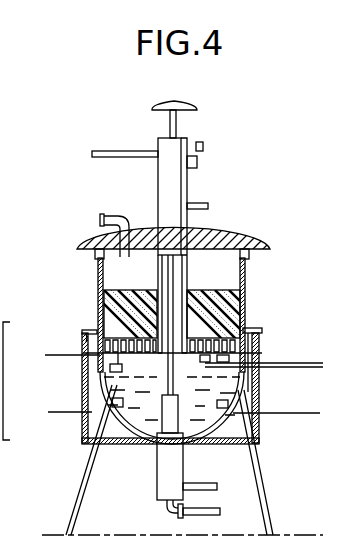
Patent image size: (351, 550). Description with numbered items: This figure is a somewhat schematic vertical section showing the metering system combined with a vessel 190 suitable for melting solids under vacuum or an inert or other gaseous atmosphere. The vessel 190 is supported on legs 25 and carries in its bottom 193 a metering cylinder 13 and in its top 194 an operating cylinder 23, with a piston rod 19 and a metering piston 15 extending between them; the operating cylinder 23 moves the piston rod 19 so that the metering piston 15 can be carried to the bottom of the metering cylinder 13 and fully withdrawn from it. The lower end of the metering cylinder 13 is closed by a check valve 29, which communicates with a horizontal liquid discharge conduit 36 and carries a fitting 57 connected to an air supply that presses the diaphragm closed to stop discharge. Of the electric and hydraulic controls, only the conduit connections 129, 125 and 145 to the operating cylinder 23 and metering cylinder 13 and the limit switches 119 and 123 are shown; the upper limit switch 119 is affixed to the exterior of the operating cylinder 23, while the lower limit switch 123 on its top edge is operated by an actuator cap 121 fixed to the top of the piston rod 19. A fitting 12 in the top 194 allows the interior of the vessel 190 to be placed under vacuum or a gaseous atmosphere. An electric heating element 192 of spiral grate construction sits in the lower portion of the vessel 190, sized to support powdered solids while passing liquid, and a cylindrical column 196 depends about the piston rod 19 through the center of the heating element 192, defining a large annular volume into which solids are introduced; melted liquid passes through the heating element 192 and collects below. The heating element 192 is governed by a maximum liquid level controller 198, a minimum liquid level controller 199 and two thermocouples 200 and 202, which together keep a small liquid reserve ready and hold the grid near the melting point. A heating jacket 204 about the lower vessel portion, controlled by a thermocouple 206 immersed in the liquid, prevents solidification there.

The fitting 12 is at (104, 216).
The metering cylinder 13 is at (255, 436).
The metering piston 15 is at (162, 410).
The piston rod 19 is at (158, 277).
The operating cylinder 23 is at (152, 201).
The legs 25 is at (85, 470).
The check valve 29 is at (157, 490).
The liquid discharge conduit 36 is at (219, 486).
The fitting 57 is at (166, 508).
The upper limit switch 119 is at (198, 162).
The actuator cap 121 is at (173, 101).
The lower limit switch 123 is at (199, 142).
The conduit connection 125 is at (208, 204).
The conduit connection 129 is at (118, 151).
The conduit connection 145 is at (221, 512).
The vessel 190 is at (98, 290).
The electric heating element 192 is at (84, 345).
The bottom 193 is at (152, 447).
The top 194 is at (221, 236).
The cylindrical column 196 is at (187, 278).
The maximum liquid level controller 198 is at (110, 367).
The minimum liquid level controller 199 is at (112, 402).
The thermocouple 200 is at (245, 312).
The thermocouple 202 is at (258, 335).
The heating jacket 204 is at (86, 332).
The thermocouple 206 is at (228, 403).